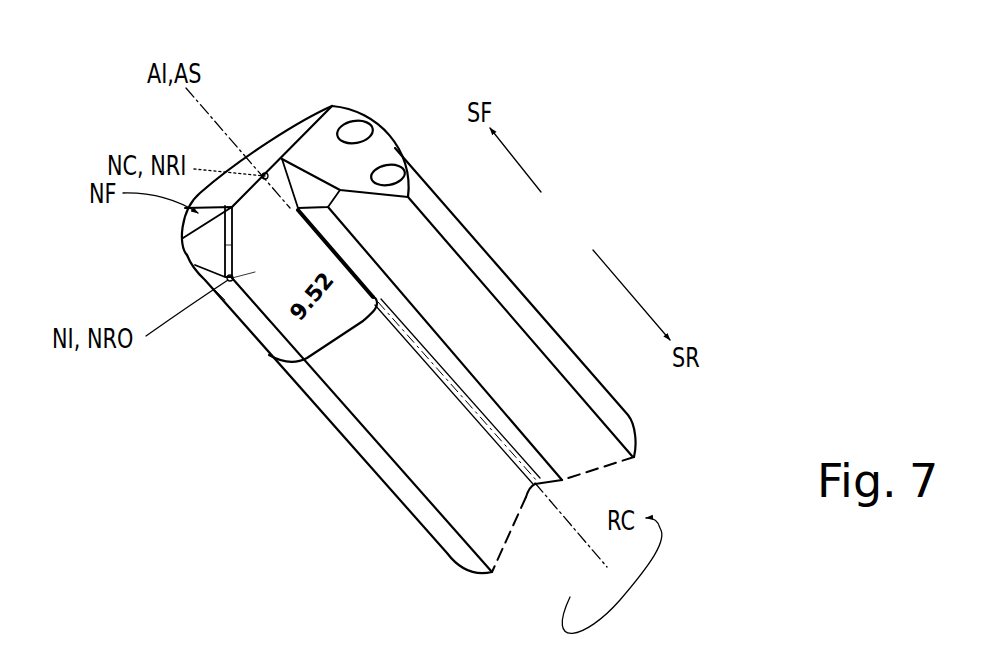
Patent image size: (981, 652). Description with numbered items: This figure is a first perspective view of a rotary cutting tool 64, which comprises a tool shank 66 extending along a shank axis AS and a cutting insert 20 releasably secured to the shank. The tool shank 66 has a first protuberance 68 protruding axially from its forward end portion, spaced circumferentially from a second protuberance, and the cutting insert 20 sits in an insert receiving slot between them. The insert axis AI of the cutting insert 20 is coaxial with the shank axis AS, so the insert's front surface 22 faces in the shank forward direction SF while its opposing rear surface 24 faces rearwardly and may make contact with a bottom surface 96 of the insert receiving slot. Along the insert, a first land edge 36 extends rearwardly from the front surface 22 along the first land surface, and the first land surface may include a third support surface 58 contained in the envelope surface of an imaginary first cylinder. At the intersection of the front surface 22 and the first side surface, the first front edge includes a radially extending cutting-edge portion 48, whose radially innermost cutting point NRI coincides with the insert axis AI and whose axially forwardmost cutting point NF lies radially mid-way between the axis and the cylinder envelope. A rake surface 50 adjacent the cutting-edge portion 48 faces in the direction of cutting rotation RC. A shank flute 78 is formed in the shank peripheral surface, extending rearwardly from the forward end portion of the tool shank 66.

The cutting insert 20 is at (190, 214).
The front surface 22 is at (297, 122).
The rear surface 24 is at (362, 325).
The first land edge 36 is at (255, 272).
The cutting-edge portion 48 is at (224, 245).
The rake surface 50 is at (225, 300).
The third support surface 58 is at (270, 322).
The rotary cutting tool 64 is at (505, 82).
The tool shank 66 is at (478, 263).
The first protuberance 68 is at (385, 153).
The shank flute 78 is at (371, 397).
The bottom surface 96 is at (340, 338).